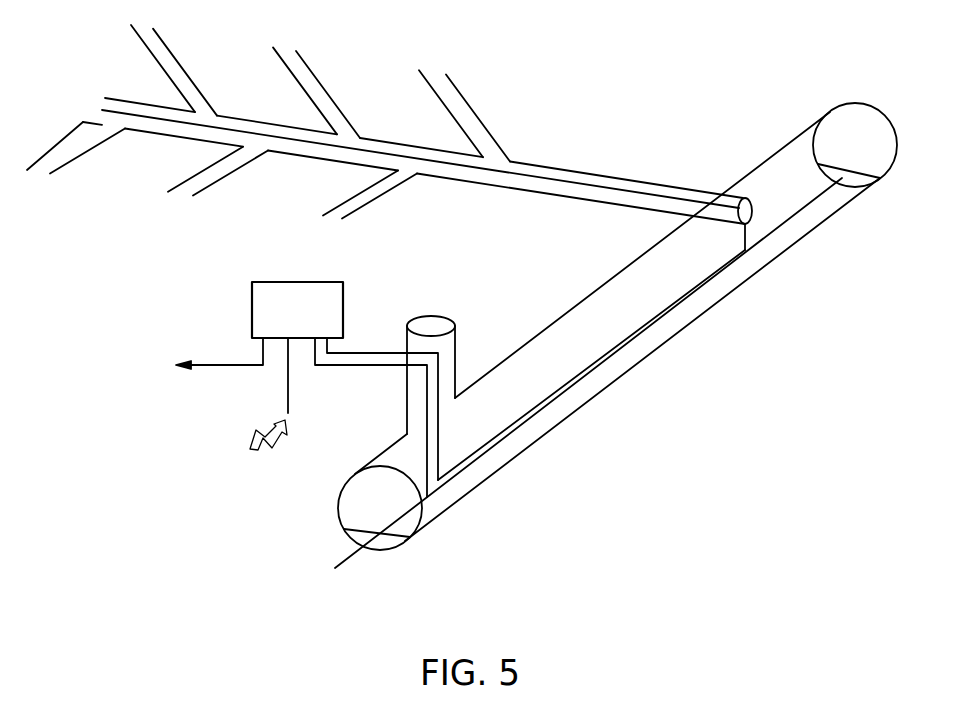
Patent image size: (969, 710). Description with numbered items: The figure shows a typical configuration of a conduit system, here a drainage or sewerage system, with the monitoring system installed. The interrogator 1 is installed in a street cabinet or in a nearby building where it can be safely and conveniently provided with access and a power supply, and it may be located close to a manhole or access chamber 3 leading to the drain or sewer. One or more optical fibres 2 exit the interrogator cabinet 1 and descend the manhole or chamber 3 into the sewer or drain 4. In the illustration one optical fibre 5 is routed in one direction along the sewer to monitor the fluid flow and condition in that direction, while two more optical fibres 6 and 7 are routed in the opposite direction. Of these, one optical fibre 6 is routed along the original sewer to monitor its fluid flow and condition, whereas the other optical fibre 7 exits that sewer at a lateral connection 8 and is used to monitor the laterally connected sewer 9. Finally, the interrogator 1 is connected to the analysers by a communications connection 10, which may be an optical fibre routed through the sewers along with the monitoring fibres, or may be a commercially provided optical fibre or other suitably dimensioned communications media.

The interrogator 1 is at (332, 295).
The optical fibres 2 is at (362, 352).
The manhole or access chamber 3 is at (445, 365).
The sewer or drain 4 is at (583, 397).
The optical fibre 5 is at (350, 560).
The optical fibre 6 is at (510, 438).
The optical fibre 7 is at (645, 185).
The lateral connection 8 is at (752, 205).
The laterally connected sewer 9 is at (380, 140).
The communications connection 10 is at (200, 361).